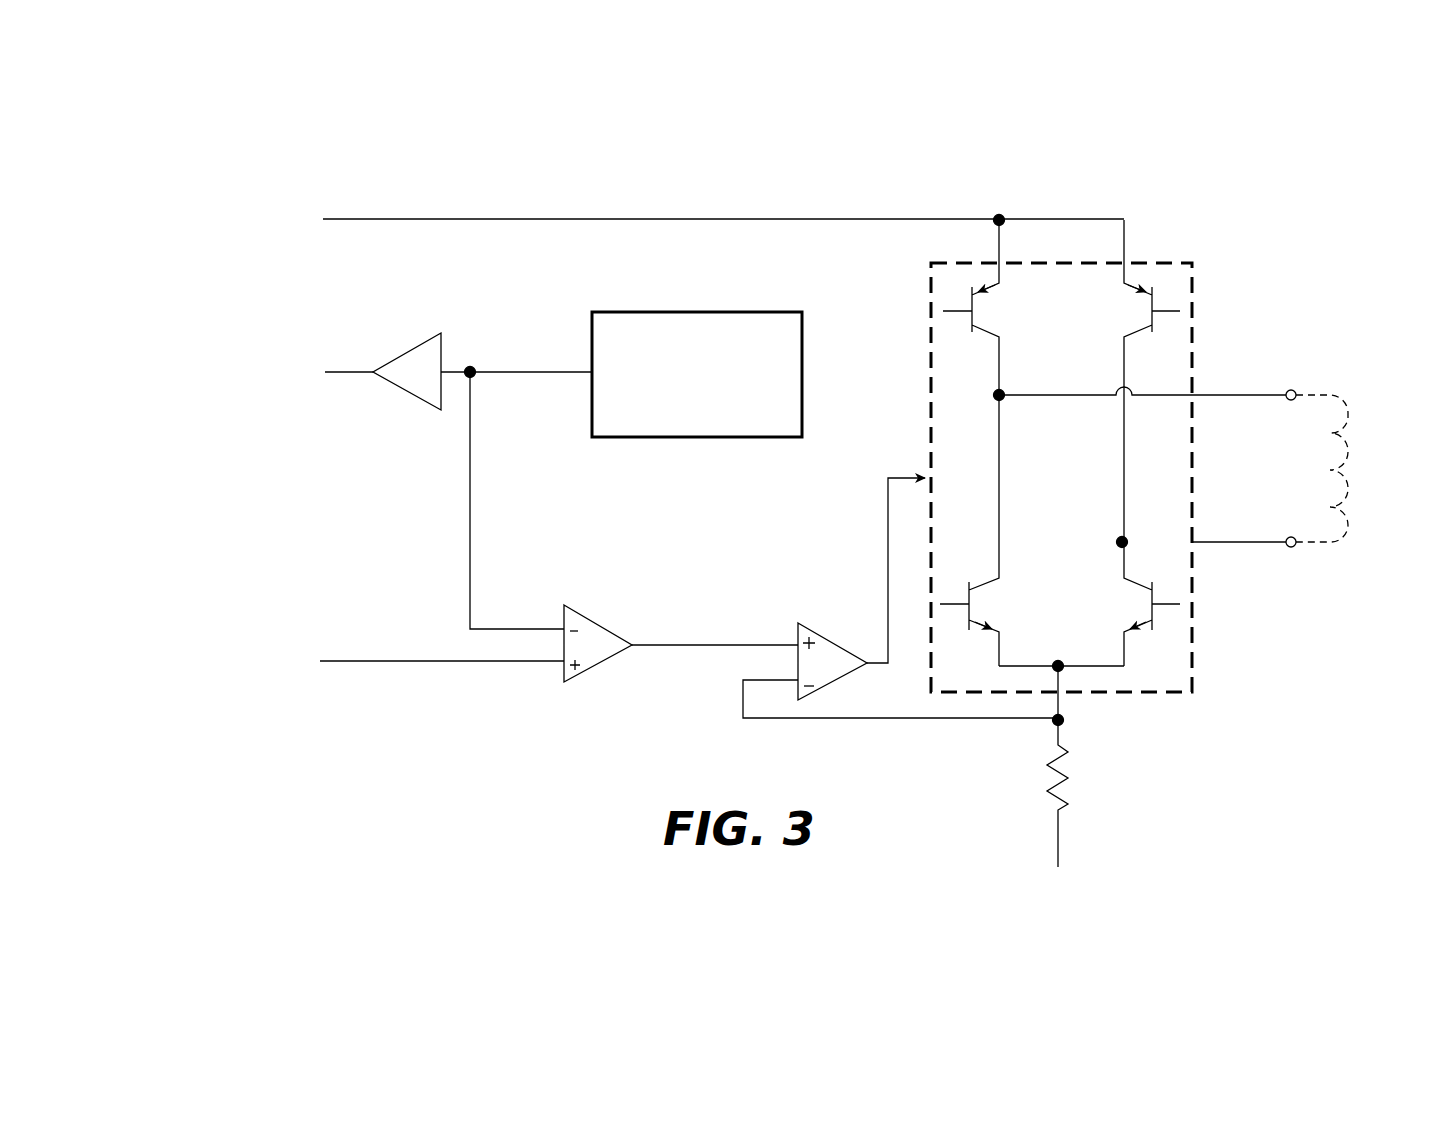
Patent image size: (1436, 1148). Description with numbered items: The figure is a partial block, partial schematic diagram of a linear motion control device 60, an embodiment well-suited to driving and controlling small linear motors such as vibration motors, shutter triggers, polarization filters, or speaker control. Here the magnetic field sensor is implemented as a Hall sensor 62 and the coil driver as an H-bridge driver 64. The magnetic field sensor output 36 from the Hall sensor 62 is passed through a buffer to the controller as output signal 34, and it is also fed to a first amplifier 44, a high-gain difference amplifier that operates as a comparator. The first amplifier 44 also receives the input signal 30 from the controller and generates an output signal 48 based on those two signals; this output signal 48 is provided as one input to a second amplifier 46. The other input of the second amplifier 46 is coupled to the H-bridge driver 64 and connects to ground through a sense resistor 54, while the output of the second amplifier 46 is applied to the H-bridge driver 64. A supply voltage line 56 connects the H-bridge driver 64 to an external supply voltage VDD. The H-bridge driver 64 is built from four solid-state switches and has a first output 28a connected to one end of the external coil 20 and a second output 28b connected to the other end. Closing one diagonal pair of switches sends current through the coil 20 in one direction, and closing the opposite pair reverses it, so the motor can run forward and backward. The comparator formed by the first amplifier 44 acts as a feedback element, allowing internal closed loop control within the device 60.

The coil 20 is at (1347, 452).
The first output 28a is at (1224, 395).
The second output 28b is at (1224, 542).
The input signal 30 is at (383, 661).
The output signal 34 is at (345, 371).
The magnetic field sensor output 36 is at (553, 371).
The first amplifier 44 is at (598, 643).
The second amplifier 46 is at (903, 602).
The output signal 48 is at (665, 648).
The sense resistor 54 is at (1066, 772).
The supply voltage line 56 is at (474, 219).
The device 60 is at (741, 138).
The Hall sensor 62 is at (697, 374).
The H-bridge driver 64 is at (1061, 470).